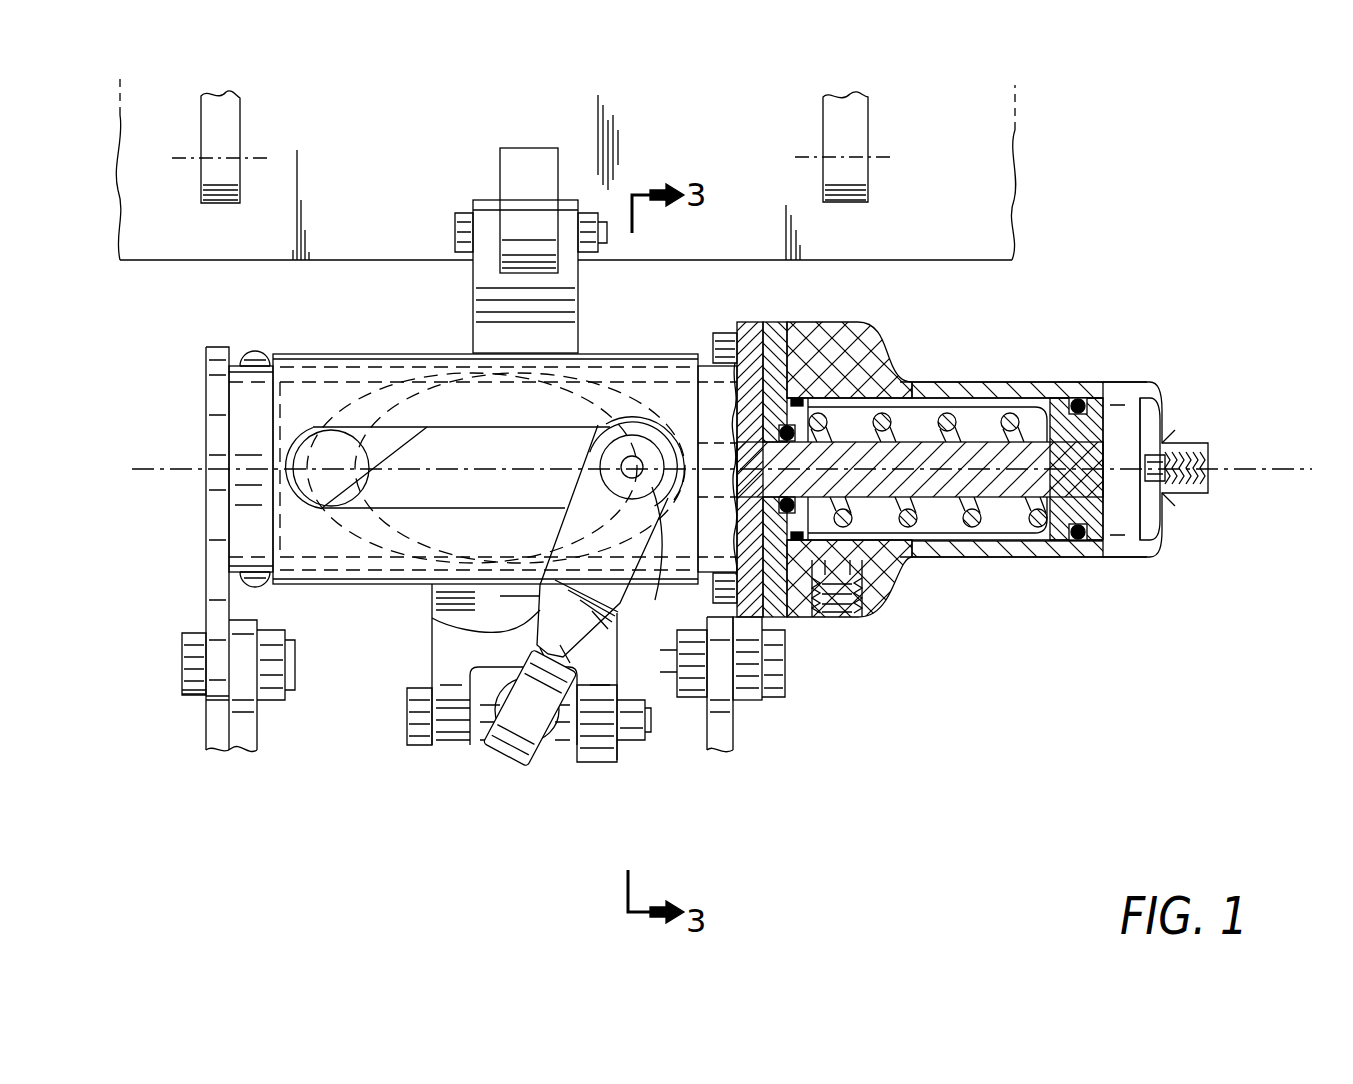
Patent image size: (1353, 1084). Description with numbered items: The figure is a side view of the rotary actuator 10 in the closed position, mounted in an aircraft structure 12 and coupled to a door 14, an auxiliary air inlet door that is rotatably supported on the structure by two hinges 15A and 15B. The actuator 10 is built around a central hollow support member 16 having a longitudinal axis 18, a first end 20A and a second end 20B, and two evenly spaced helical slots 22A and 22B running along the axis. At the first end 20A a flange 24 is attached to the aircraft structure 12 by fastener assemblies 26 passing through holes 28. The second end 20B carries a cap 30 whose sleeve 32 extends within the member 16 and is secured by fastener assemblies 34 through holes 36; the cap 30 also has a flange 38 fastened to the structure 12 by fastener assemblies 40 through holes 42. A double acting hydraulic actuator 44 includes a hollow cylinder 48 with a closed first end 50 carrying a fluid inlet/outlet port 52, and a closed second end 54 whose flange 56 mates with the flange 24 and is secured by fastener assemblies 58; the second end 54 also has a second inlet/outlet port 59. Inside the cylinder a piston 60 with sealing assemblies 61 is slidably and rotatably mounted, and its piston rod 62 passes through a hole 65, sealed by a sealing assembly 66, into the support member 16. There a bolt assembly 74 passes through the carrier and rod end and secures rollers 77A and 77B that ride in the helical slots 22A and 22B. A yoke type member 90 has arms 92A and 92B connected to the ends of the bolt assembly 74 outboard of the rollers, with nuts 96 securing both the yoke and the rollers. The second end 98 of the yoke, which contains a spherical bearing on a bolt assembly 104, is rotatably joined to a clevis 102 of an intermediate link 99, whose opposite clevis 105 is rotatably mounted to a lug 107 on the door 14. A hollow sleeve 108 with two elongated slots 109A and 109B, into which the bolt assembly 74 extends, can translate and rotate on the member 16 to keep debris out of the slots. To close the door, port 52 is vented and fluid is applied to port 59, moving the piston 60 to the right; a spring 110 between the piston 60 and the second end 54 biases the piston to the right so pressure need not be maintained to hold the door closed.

The rotary actuator 10 is at (1206, 247).
The aircraft structure 12 is at (247, 755).
The door 14 is at (1016, 188).
The hinge 15A is at (240, 118).
The hinge 15B is at (868, 118).
The central hollow support member 16 is at (750, 322).
The longitudinal axis 18 is at (1272, 468).
The first end 20A is at (1210, 490).
The second end 20B is at (229, 445).
The helical slot 22A is at (376, 392).
The helical slot 22B is at (346, 562).
The flange 24 is at (748, 702).
The fastener assembly 26 is at (781, 681).
The hole 28 is at (785, 685).
The cap 30 is at (212, 500).
The sleeve 32 is at (225, 543).
The fastener assembly 34 is at (262, 306).
The hole 36 is at (182, 452).
The flange 38 is at (212, 700).
The fastener assembly 40 is at (170, 665).
The hole 42 is at (182, 660).
The double acting hydraulic actuator 44 is at (985, 376).
The hollow cylinder 48 is at (1072, 382).
The first end 50 is at (1157, 390).
The fluid inlet/outlet port 52 is at (1206, 460).
The second end 54 is at (796, 322).
The flange 56 is at (778, 322).
The fastener assembly 58 is at (718, 332).
The second inlet/outlet port 59 is at (838, 619).
The piston 60 is at (1158, 518).
The sealing assembly 61 is at (1077, 541).
The piston rod 62 is at (942, 505).
The hole 65 is at (808, 457).
The sealing assembly 66 is at (838, 435).
The bolt assembly 74 is at (604, 546).
The roller 77A is at (637, 397).
The roller 77B is at (641, 430).
The yoke type member 90 is at (432, 621).
The arm 92A is at (661, 662).
The arm 92B is at (620, 603).
The nut 96 is at (558, 746).
The second end 98 is at (506, 760).
The intermediate link 99 is at (432, 660).
The clevis 102 is at (450, 764).
The bolt assembly 104 is at (407, 720).
The clevis 105 is at (472, 288).
The lug 107 is at (523, 147).
The hollow sleeve 108 is at (320, 353).
The elongated slot 109A is at (339, 449).
The elongated slot 109B is at (312, 427).
The spring 110 is at (947, 403).